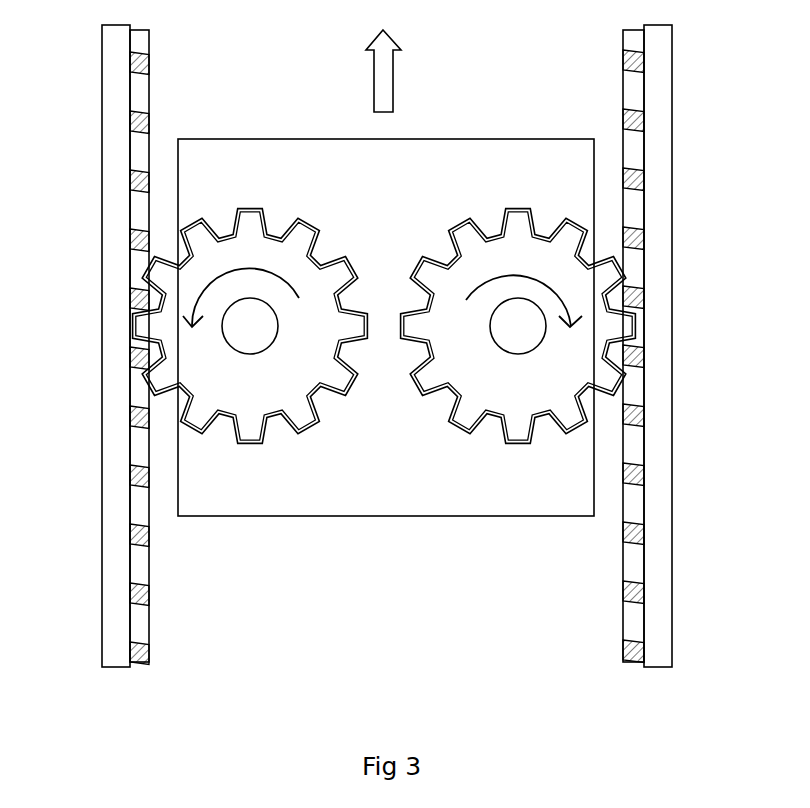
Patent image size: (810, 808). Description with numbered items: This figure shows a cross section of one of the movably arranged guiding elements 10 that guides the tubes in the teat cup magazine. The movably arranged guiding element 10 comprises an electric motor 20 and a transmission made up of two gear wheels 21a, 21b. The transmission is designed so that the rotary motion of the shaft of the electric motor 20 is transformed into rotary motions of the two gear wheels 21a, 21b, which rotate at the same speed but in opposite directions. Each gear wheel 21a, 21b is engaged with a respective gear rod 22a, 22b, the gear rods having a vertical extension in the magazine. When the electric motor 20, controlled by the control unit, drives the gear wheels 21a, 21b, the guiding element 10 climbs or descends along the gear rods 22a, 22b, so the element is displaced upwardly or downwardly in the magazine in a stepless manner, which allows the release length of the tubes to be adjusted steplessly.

The movably arranged guiding element 10 is at (258, 122).
The electric motor 20 is at (393, 475).
The gear wheel 21a is at (277, 260).
The gear wheel 21b is at (502, 258).
The gear rod 22a is at (133, 413).
The gear rod 22b is at (643, 417).